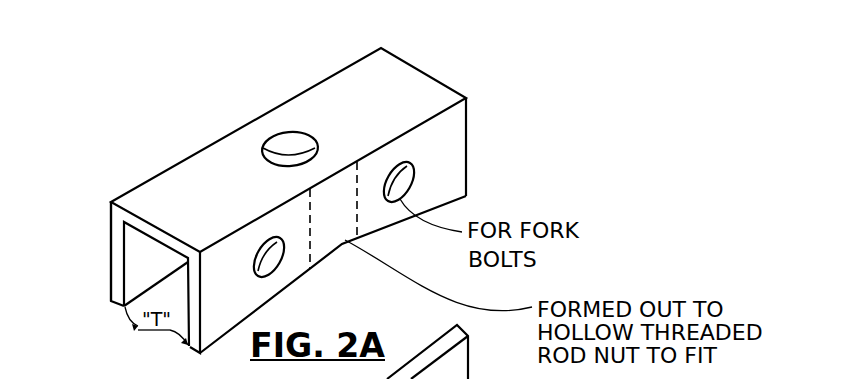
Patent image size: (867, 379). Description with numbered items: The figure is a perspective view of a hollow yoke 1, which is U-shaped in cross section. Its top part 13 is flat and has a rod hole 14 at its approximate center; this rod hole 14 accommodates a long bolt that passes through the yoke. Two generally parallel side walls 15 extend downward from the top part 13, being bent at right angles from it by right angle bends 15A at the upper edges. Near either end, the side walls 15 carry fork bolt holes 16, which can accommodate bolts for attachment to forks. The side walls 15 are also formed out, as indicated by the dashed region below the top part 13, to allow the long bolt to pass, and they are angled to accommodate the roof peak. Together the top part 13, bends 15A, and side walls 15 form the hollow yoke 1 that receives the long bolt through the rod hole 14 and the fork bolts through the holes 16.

The hollow yoke 1 is at (295, 185).
The top part 13 is at (395, 87).
The rod hole 14 is at (283, 143).
The side walls 15 is at (117, 248).
The right angle bends 15A is at (116, 199).
The fork bolt holes 16 is at (277, 266).